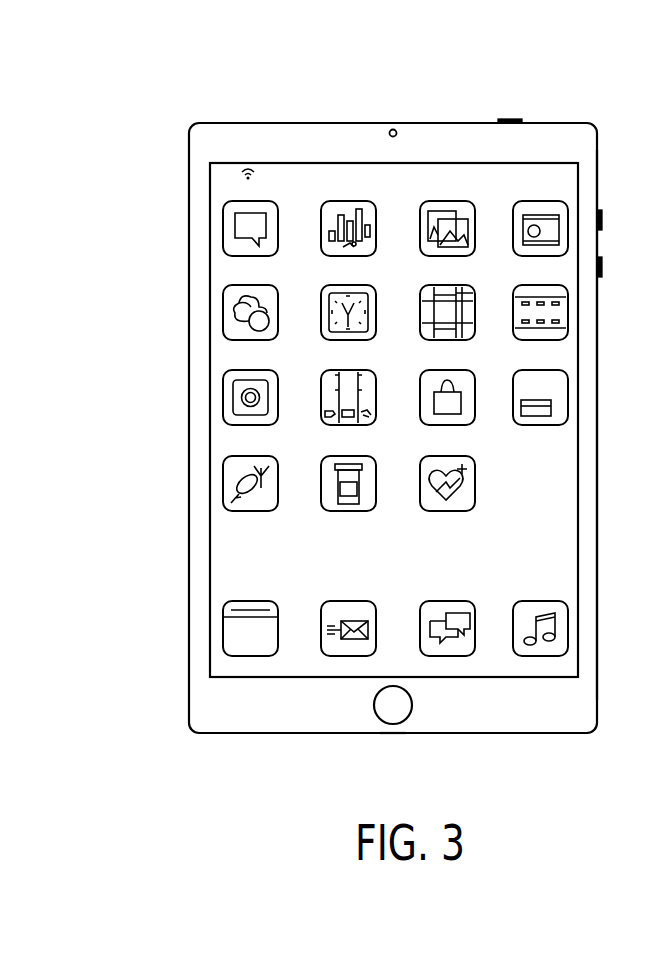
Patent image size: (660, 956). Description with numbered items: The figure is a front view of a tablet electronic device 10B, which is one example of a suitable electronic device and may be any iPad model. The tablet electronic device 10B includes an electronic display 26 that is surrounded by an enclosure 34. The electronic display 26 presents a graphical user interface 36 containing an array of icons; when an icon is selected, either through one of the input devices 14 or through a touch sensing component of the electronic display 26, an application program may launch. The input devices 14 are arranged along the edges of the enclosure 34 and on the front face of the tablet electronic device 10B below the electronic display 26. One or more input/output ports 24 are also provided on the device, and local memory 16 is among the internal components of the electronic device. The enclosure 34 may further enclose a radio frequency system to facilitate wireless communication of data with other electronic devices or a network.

The tablet electronic device 10B is at (198, 80).
The input devices 14 is at (512, 121).
The local memory 16 is at (393, 733).
The input/output ports 24 is at (268, 123).
The electronic display 26 is at (578, 420).
The enclosure 34 is at (599, 372).
The graphical user interface 36 is at (553, 500).